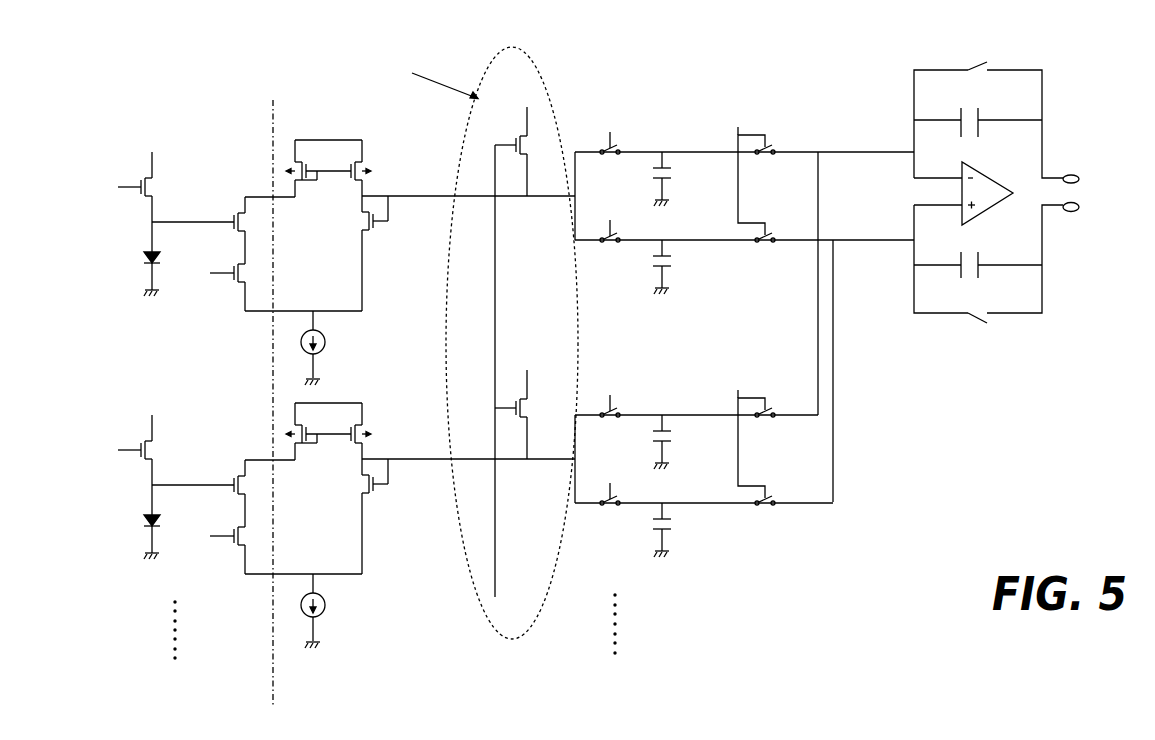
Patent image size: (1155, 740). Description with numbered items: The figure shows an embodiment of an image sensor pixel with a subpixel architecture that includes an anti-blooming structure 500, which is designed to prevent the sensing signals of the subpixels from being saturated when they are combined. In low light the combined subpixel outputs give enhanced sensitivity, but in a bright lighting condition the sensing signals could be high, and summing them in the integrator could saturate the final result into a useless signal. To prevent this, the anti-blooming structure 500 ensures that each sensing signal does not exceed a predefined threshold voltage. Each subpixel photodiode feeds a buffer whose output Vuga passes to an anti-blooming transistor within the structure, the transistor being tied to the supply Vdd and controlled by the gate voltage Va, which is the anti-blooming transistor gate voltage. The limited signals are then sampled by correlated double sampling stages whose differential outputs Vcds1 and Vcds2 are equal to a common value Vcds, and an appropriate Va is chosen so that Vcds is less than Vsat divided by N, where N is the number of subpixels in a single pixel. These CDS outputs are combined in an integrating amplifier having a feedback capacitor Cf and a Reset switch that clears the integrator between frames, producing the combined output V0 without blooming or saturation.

The anti-blooming structure 500 is at (253, 402).
The unity gain amplifier output voltage node Vuga is at (468, 315).
The supply voltage node of anti-blooming transistor Vdd is at (371, 338).
The anti-blooming transistor gate voltage Va is at (507, 377).
The CDS differential output Vcds1 is at (744, 296).
The CDS differential output Vcds2 is at (704, 507).
The reset switch of integrating amplifier Reset is at (988, 180).
The feedback capacitor Cf is at (978, 185).
The output voltage terminal of amplifier V0 is at (1012, 193).